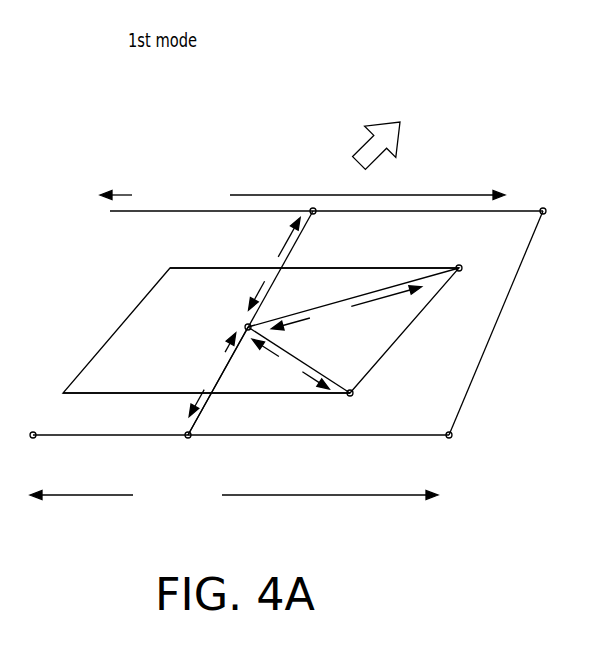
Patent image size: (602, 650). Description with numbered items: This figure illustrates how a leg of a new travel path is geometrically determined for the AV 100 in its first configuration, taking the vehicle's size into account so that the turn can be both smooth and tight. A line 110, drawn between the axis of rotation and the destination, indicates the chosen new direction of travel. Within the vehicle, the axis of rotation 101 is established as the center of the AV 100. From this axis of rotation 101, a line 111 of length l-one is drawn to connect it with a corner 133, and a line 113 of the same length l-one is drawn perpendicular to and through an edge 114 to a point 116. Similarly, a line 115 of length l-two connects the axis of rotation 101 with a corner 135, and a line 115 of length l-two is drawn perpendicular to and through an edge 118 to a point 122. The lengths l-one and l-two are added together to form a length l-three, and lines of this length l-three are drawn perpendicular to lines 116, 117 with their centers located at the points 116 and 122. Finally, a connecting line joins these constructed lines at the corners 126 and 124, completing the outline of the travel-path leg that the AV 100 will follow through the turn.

The AV 100 is at (106, 120).
The axis of rotation 101 is at (246, 326).
The line 110 is at (366, 143).
The line 111 is at (350, 297).
The line 113 is at (292, 249).
The edge 114 is at (188, 268).
The line 115 is at (300, 360).
The point 116 is at (313, 211).
The line 117 is at (207, 405).
The edge 118 is at (105, 396).
The point 122 is at (192, 440).
The corner 124 is at (452, 436).
The corner 126 is at (543, 211).
The corner 133 is at (459, 268).
The corner 135 is at (357, 391).